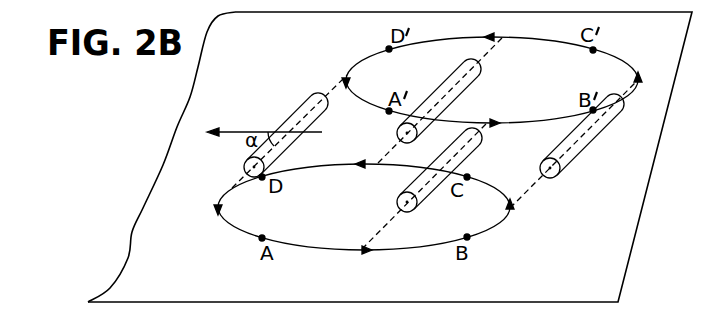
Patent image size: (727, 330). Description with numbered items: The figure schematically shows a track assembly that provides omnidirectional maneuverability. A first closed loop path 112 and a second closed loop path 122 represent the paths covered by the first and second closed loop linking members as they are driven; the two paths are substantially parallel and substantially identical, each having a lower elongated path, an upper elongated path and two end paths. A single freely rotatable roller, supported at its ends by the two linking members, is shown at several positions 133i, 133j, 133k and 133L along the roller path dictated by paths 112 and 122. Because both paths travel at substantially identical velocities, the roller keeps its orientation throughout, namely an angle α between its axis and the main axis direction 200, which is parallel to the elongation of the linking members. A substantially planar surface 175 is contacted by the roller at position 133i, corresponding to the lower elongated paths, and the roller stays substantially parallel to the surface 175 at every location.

The first closed loop path 112 is at (243, 233).
The second closed loop path 122 is at (637, 48).
The roller position 133L is at (300, 110).
The roller position 133k is at (468, 77).
The roller position 133i is at (412, 180).
The roller position 133j is at (575, 148).
The substantially planar surface 175 is at (593, 284).
The main axis direction 200 is at (264, 121).